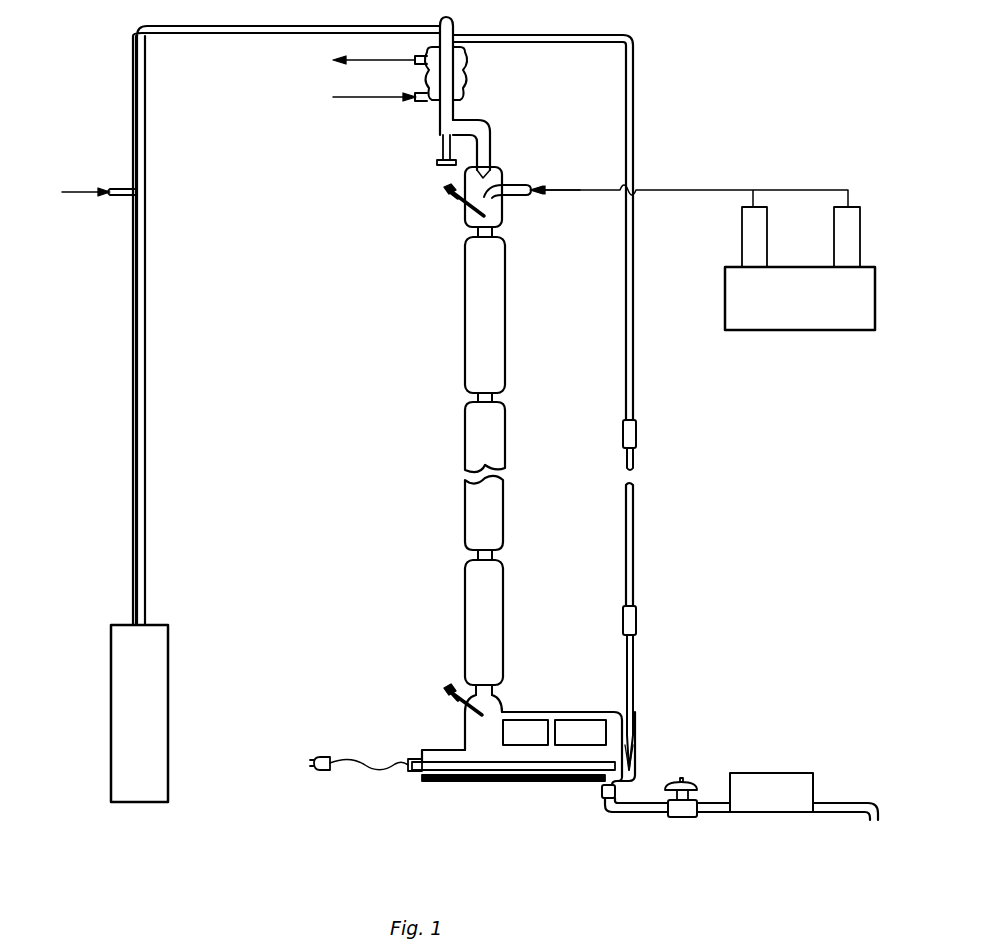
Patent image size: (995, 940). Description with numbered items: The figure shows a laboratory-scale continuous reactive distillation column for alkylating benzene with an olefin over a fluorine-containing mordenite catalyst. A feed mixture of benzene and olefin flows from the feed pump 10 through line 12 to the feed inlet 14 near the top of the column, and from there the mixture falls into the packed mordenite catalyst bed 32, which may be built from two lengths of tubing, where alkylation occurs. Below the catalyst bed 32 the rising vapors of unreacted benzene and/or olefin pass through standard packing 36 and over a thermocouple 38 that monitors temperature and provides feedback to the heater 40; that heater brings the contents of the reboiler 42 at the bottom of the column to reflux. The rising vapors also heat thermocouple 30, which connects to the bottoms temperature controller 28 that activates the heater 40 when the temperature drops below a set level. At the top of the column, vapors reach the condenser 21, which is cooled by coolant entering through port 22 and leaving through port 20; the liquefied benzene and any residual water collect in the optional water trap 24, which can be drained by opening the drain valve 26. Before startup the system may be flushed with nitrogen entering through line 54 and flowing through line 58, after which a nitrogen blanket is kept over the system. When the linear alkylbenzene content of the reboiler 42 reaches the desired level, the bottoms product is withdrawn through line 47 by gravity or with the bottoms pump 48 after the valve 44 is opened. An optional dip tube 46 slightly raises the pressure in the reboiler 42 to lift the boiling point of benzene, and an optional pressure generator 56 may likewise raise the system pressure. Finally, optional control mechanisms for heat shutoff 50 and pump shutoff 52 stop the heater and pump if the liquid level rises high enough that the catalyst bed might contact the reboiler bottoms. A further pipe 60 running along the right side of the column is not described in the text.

The feed pump 10 is at (757, 330).
The line 12 is at (690, 190).
The feed inlet 14 is at (522, 196).
The port 20 is at (352, 60).
The condenser 21 is at (466, 86).
The port 22 is at (350, 97).
The water trap 24 is at (428, 130).
The drain valve 26 is at (428, 157).
The bottoms temperature controller 28 is at (462, 203).
The thermocouple 30 is at (455, 202).
The packed mordenite catalyst bed 32 is at (465, 315).
The standard packing 36 is at (465, 638).
The thermocouple 38 is at (458, 708).
The heater 40 is at (410, 760).
The reboiler 42 is at (420, 782).
The valve 44 is at (600, 797).
The dip tube 46 is at (634, 752).
The line 47 is at (625, 815).
The bottoms pump 48 is at (752, 773).
The heat shutoff control mechanism 50 is at (637, 618).
The pump shutoff control mechanism 52 is at (637, 435).
The line 54 is at (86, 190).
The pressure generator 56 is at (111, 665).
The line 58 is at (135, 66).
The right pipe 60 is at (635, 105).